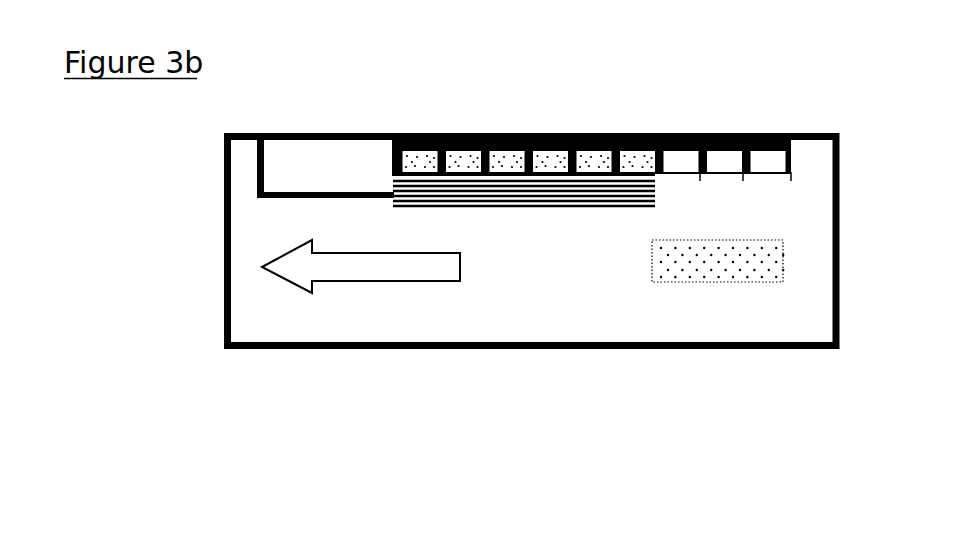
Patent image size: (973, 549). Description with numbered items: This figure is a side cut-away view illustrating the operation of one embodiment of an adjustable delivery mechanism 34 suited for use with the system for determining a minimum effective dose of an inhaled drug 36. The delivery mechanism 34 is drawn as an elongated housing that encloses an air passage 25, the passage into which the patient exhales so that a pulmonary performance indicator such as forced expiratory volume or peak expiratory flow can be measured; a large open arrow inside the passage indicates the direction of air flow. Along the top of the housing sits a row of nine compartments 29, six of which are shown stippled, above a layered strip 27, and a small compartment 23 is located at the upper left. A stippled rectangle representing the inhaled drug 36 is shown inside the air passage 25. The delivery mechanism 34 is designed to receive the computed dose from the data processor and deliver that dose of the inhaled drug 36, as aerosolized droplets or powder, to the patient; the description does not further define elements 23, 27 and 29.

The adjustable delivery mechanism 34 is at (303, 78).
The left compartment 23 is at (282, 163).
The cells 29 is at (423, 160).
The striped region 27 is at (572, 196).
The air passage 25 is at (812, 280).
The inhaled drug 36 is at (742, 262).